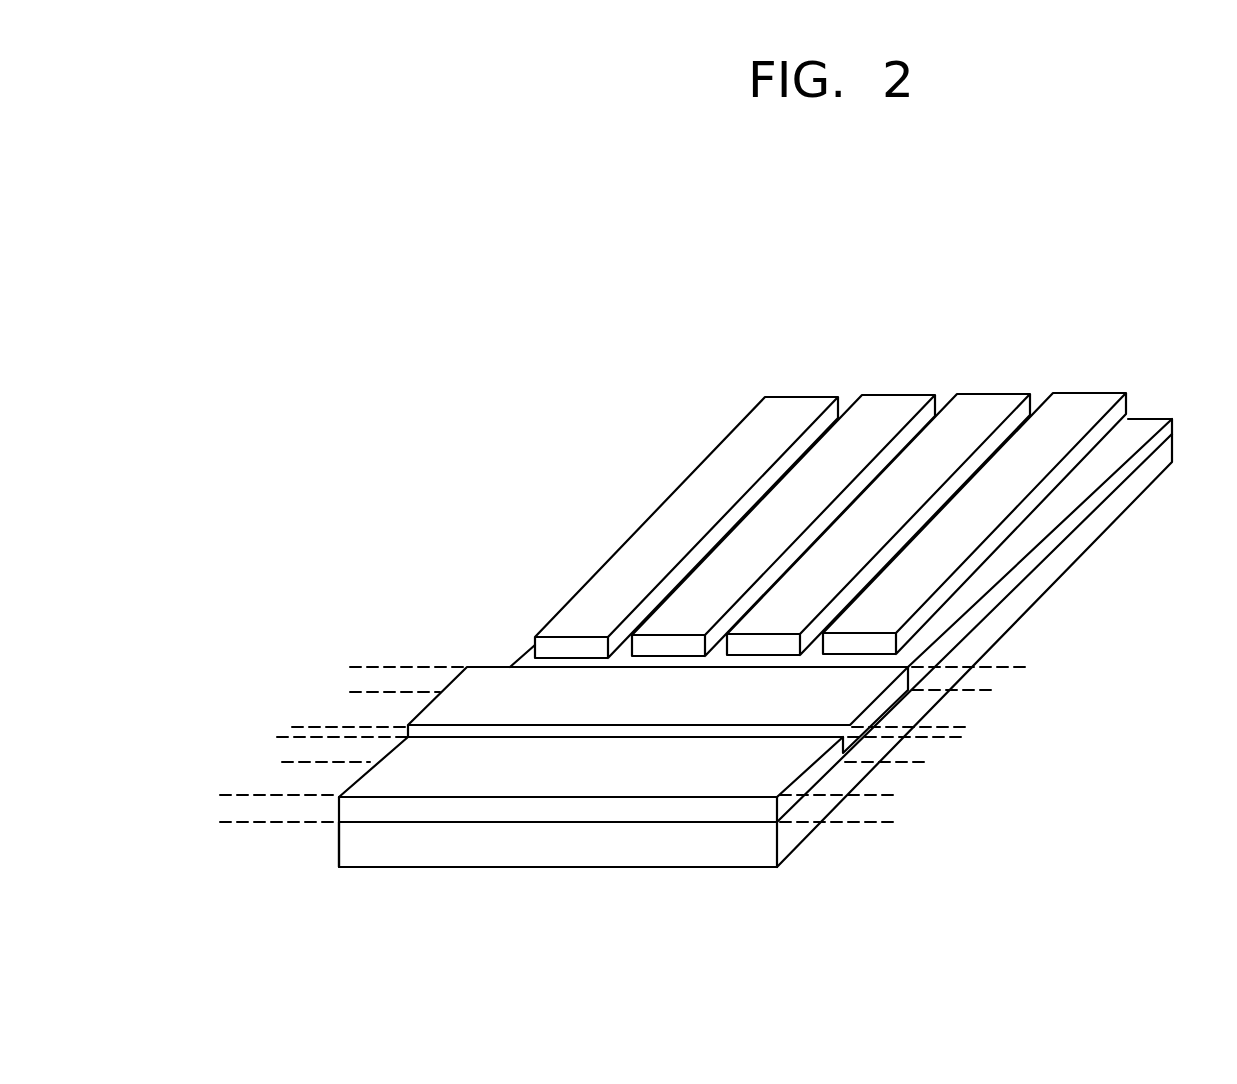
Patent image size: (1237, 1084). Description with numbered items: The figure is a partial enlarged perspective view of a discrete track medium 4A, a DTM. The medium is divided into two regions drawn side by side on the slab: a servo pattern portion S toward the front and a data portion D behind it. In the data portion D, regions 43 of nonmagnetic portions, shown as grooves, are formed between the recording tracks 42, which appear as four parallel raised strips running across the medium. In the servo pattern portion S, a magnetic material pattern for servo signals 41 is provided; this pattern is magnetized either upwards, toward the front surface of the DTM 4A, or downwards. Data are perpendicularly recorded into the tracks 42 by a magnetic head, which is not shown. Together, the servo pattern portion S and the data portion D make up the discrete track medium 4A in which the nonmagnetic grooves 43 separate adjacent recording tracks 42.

The discrete track medium 4A is at (1072, 548).
The magnetic material pattern for servo signals 41 is at (708, 810).
The recording tracks 42 is at (1093, 393).
The regions of nonmagnetic portions 43 is at (1042, 390).
The servo pattern portion S is at (343, 645).
The data portion D is at (855, 460).